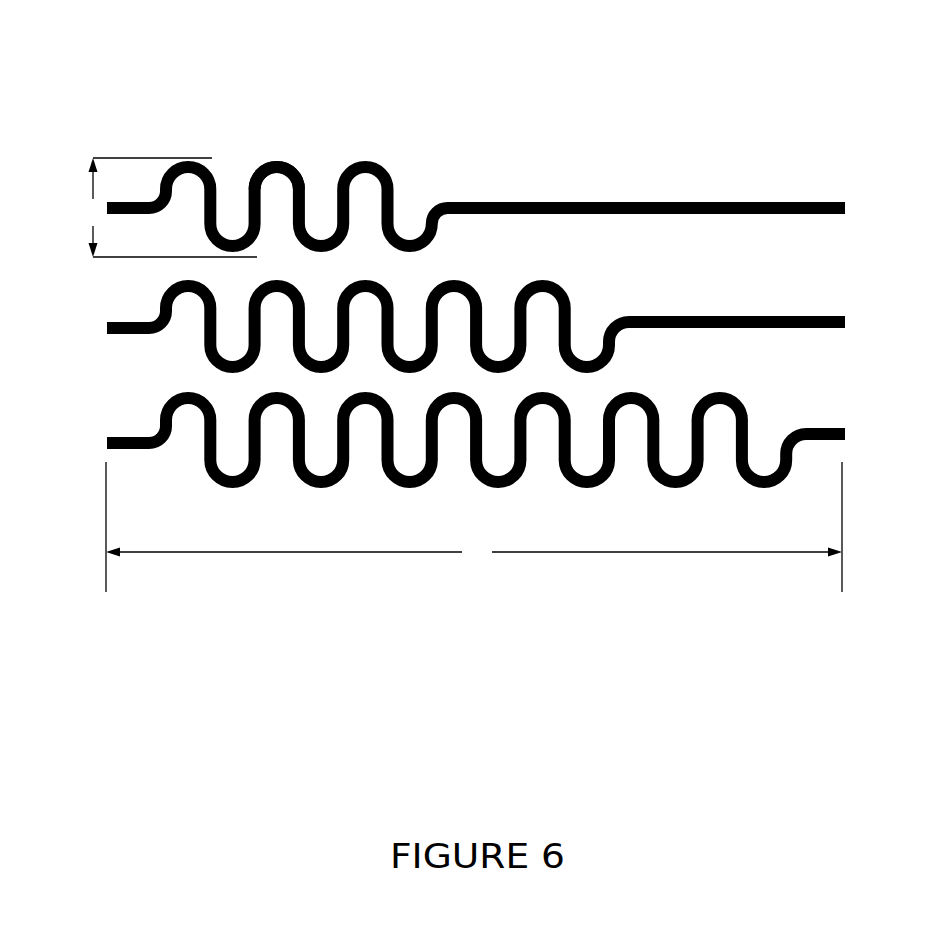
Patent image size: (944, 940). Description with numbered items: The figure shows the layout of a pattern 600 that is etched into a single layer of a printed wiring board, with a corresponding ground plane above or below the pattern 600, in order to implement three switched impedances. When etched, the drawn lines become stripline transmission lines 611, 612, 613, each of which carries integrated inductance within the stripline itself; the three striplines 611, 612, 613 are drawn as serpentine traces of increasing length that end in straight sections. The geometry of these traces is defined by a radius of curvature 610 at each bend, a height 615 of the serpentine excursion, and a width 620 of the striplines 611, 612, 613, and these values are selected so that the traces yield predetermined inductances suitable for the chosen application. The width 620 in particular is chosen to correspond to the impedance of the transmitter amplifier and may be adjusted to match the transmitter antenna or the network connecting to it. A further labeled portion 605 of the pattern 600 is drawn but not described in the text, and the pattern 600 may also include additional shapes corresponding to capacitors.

The pattern 600 is at (135, 45).
The straight trace segment of width W 605 is at (808, 133).
The radius of curvature 610 is at (332, 103).
The stripline transmission line 611 is at (476, 206).
The stripline transmission line 612 is at (476, 326).
The stripline transmission line 613 is at (476, 440).
The height 615 is at (80, 200).
The width 620 is at (470, 537).